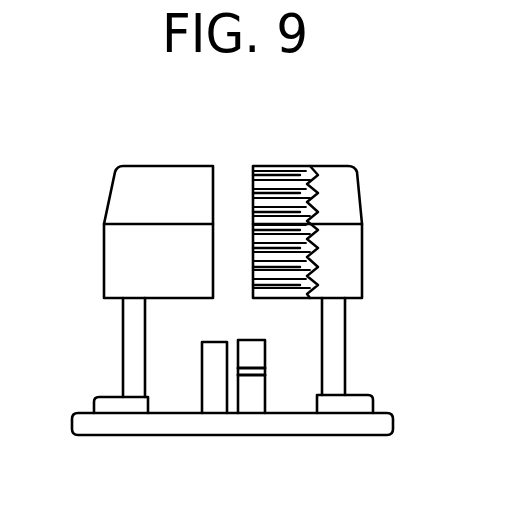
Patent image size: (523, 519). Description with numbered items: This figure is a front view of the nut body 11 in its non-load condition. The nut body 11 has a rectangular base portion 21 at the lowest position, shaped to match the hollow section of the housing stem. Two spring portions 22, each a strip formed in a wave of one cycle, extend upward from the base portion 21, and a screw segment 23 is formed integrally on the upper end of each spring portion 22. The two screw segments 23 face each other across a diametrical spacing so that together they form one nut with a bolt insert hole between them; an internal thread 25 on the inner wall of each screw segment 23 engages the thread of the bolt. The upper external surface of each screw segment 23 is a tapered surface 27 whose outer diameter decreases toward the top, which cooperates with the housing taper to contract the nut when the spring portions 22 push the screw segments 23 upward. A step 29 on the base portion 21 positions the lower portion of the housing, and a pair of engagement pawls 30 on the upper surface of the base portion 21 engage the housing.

The nut body 11 is at (362, 154).
The base portion 21 is at (153, 425).
The spring portion 22 is at (132, 361).
The screw segment 23 is at (118, 268).
The internal thread 25 is at (275, 198).
The tapered surface 27 is at (107, 195).
The step 29 is at (100, 401).
The engagement pawl 30 is at (213, 397).